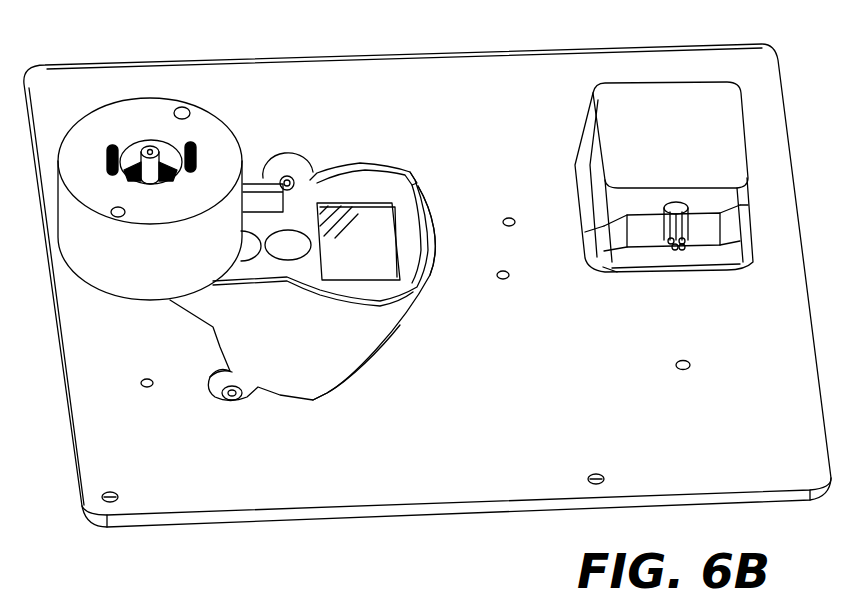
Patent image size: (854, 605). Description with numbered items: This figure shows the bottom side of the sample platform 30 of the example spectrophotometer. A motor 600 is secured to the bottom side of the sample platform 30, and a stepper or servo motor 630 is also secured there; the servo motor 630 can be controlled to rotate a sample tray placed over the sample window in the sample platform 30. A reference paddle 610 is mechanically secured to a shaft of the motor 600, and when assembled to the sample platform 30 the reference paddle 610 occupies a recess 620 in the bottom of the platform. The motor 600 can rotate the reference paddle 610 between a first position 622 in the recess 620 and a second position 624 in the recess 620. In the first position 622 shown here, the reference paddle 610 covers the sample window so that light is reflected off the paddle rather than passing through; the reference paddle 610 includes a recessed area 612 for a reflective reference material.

The sample platform 30 is at (495, 67).
The motor 600 is at (213, 130).
The reference paddle 610 is at (370, 191).
The recessed area 612 is at (337, 209).
The recess 620 is at (295, 341).
The first position 622 is at (446, 284).
The second position 624 is at (336, 378).
The servo motor 630 is at (697, 98).